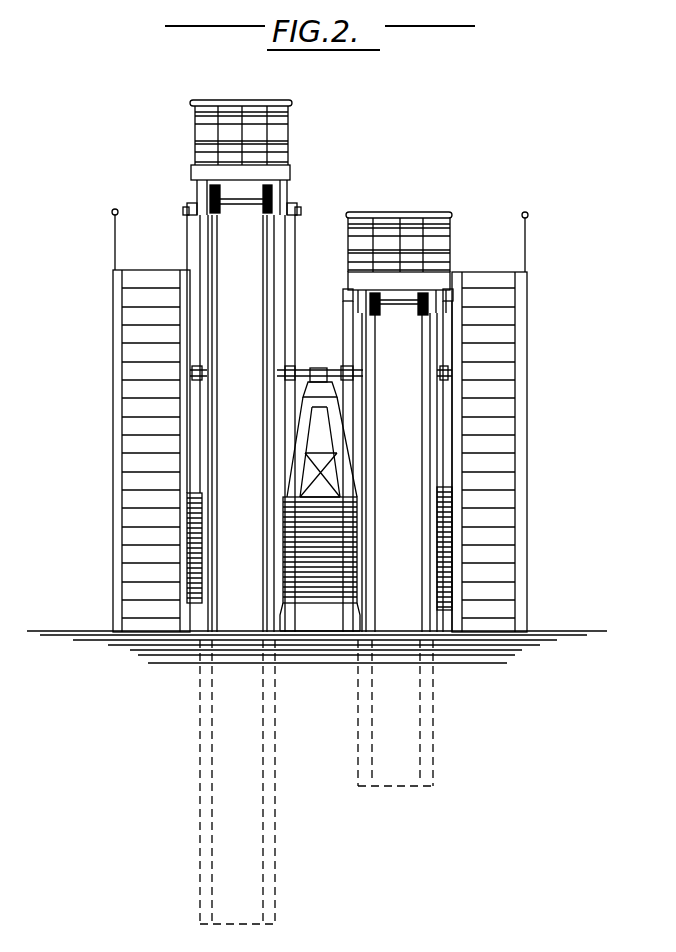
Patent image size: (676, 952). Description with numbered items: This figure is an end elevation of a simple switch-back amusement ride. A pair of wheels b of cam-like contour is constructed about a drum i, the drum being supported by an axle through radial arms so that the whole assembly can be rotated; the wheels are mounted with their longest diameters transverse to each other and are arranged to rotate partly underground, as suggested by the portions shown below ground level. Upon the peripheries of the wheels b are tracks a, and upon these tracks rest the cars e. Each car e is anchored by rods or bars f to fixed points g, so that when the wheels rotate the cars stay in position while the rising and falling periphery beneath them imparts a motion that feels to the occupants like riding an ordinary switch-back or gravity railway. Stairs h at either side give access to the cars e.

The tracks a is at (264, 289).
The wheels b is at (278, 410).
The cars e is at (288, 176).
The rods or bars f is at (190, 244).
The fixed points g is at (318, 370).
The stairs h is at (120, 438).
The drum i is at (320, 564).